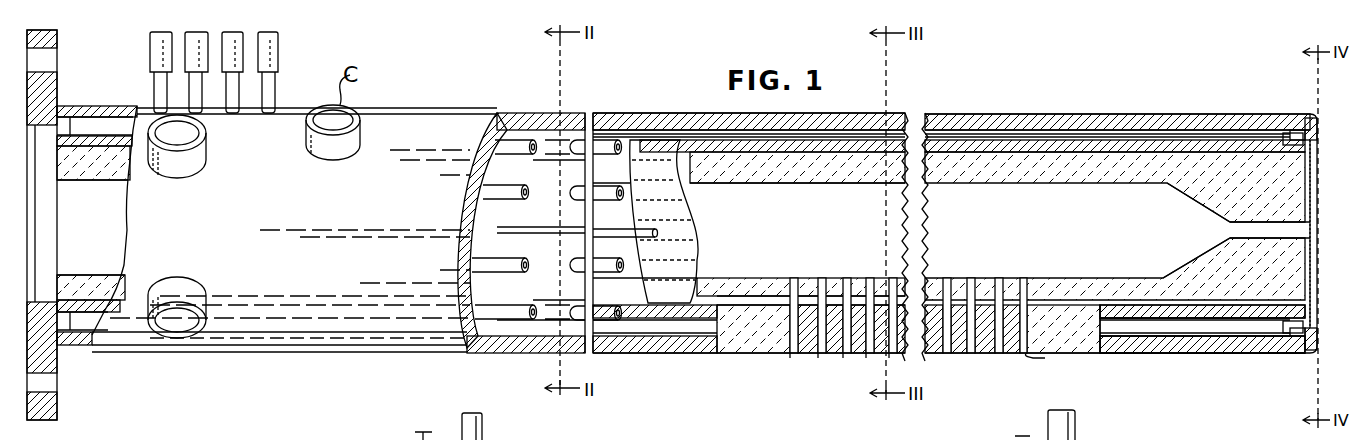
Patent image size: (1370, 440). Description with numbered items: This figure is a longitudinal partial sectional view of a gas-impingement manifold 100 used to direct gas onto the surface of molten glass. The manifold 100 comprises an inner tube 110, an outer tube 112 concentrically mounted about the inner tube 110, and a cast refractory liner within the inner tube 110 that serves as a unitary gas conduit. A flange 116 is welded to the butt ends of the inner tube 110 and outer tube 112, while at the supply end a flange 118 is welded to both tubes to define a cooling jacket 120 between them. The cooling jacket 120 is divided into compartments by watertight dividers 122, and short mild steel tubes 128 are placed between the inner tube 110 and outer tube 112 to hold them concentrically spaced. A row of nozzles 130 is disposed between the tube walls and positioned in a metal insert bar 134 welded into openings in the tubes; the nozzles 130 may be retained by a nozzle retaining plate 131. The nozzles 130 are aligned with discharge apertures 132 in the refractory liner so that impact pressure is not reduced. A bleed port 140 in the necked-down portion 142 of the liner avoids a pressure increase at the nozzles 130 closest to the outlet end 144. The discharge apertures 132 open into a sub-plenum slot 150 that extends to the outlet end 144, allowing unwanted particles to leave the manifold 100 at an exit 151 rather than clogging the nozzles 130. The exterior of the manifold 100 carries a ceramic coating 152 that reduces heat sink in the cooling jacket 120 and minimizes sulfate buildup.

The gas-impingement manifold 100 is at (975, 83).
The inner tube 110 is at (1147, 146).
The outer tube 112 is at (1090, 135).
The flange 116 is at (1316, 141).
The flange 118 is at (57, 85).
The cooling jacket 120 is at (1293, 133).
The dividers 122 is at (560, 132).
The mild steel tubes 128 is at (518, 155).
The nozzles 130 is at (870, 375).
The nozzle retaining plate 131 is at (1033, 353).
The discharge apertures 132 is at (815, 272).
The metal insert bar 134 is at (1078, 342).
The bleed port 140 is at (1305, 230).
The necked-down portion 142 is at (1202, 204).
The outlet end 144 is at (1132, 287).
The sub-plenum slot 150 is at (1182, 305).
The exit 151 is at (1310, 305).
The coating 152 is at (1030, 116).